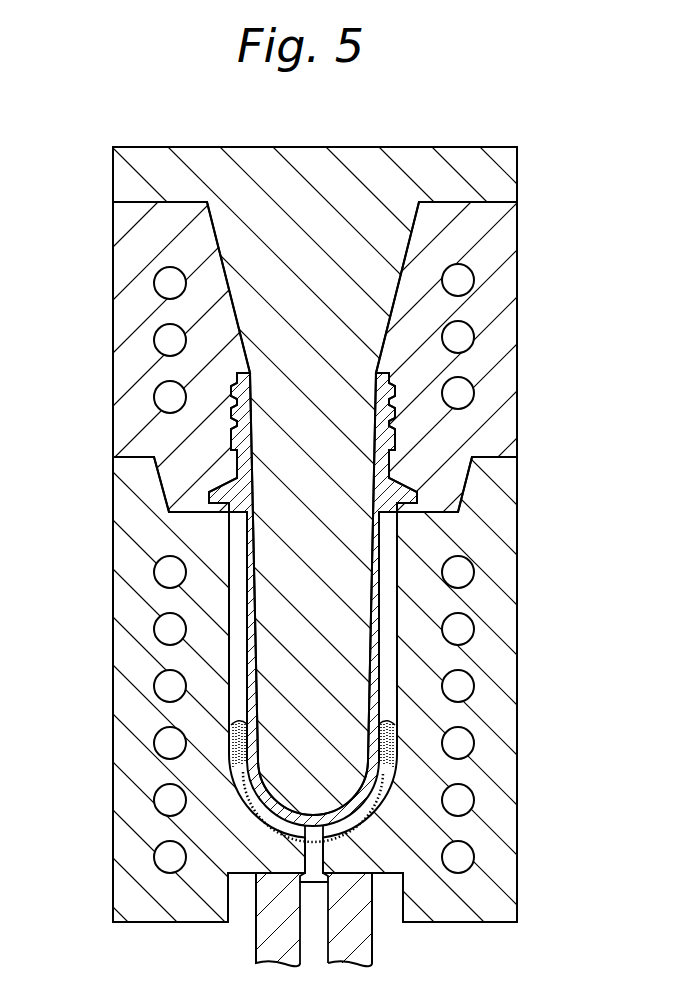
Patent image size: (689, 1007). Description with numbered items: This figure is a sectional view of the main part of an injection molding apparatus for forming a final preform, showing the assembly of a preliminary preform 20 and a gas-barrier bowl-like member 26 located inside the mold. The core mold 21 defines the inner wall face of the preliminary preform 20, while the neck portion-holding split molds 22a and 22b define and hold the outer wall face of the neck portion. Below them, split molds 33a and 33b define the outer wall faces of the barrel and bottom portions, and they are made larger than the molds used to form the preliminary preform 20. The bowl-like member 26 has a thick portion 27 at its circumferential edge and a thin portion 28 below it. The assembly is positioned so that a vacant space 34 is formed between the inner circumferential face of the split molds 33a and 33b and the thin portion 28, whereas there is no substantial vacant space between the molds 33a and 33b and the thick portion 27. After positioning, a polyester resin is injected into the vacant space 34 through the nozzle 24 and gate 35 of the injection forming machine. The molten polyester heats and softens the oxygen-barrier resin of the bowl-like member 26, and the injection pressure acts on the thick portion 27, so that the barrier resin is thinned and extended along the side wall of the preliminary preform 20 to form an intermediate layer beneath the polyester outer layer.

The preliminary preform 20 is at (400, 478).
The core mold 21 is at (371, 164).
The neck portion-holding split mold 22a is at (500, 290).
The neck portion-holding split mold 22b is at (128, 318).
The nozzle 24 is at (355, 945).
The bowl-like member 26 is at (396, 713).
The thick portion 27 is at (397, 725).
The thin portion 28 is at (368, 826).
The split mold 33a is at (498, 558).
The split mold 33b is at (130, 574).
The vacant space 34 is at (300, 838).
The gate 35 is at (318, 846).